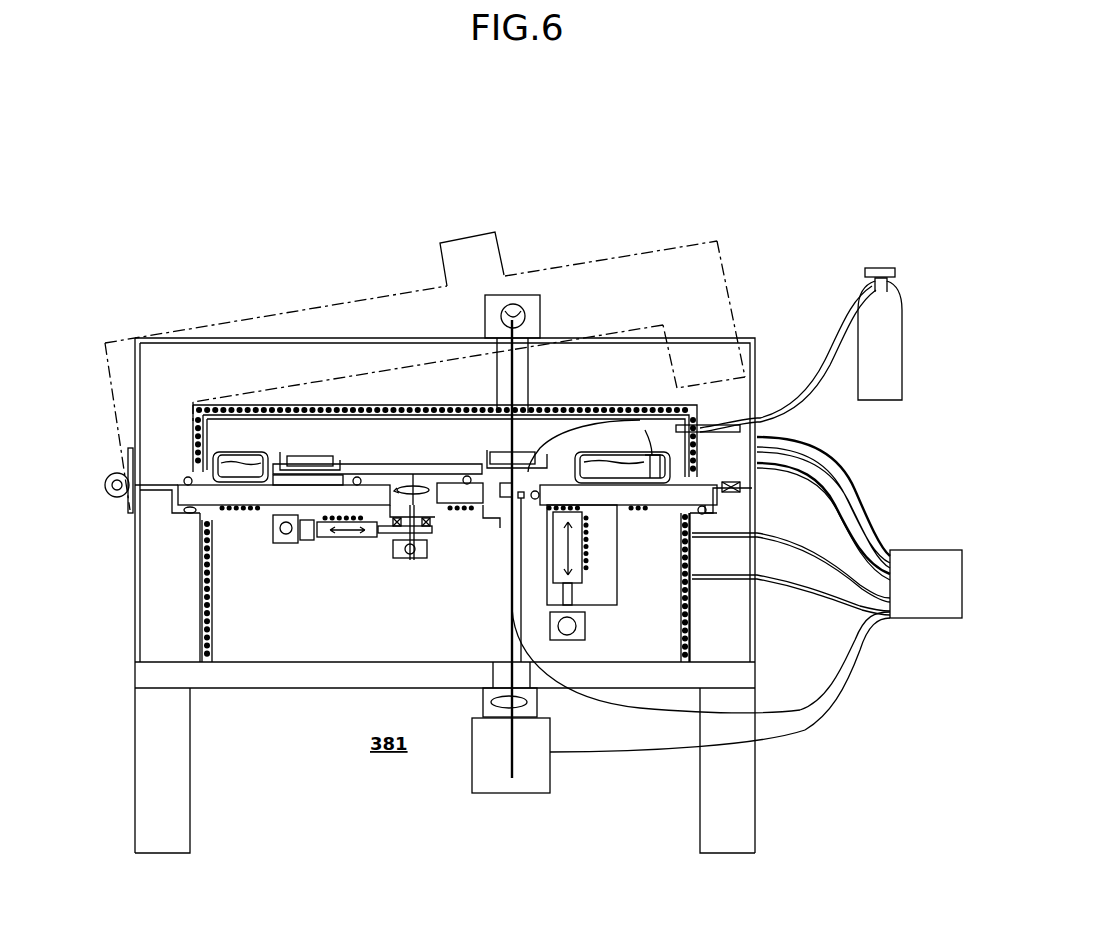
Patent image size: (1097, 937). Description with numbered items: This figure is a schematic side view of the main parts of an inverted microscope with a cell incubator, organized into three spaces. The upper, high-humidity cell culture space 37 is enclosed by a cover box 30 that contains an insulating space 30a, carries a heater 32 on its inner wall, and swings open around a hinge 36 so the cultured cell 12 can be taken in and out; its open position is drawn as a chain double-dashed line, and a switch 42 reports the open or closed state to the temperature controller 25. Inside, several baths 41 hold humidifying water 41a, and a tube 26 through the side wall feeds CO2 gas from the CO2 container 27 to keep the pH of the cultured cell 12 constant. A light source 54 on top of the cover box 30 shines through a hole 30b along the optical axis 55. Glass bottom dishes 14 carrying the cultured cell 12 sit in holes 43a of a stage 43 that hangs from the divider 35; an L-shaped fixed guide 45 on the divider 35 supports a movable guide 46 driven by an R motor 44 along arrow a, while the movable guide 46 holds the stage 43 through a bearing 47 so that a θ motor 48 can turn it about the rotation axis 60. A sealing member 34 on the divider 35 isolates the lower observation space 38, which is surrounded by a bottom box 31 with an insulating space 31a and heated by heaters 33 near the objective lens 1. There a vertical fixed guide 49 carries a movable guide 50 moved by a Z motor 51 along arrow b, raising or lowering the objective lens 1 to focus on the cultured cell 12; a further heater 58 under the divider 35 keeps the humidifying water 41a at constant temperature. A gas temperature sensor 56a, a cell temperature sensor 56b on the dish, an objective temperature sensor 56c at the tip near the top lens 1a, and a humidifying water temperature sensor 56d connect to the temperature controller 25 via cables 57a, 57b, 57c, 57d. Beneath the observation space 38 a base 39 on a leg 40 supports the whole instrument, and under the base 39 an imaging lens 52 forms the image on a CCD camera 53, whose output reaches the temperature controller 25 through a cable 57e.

The objective lens 1 is at (500, 515).
The top lens 1a is at (483, 514).
The cultured cell 12 is at (298, 456).
The glass bottom dish 14 is at (335, 455).
The temperature controller 25 is at (930, 622).
The tube 26 is at (827, 339).
The CO2 container 27 is at (903, 372).
The cover box 30 is at (207, 322).
The space 30a is at (147, 407).
The hole 30b is at (500, 371).
The bottom box 31 is at (135, 538).
The space 31a is at (138, 569).
The heater 32 is at (280, 406).
The heater 33 is at (213, 613).
The sealing member 34 is at (186, 477).
The divider 35 is at (178, 508).
The hinge 36 is at (106, 487).
The cell culture space 37 is at (358, 420).
The observation space 38 is at (208, 643).
The base 39 is at (233, 678).
The leg 40 is at (135, 757).
The bath 41 is at (264, 458).
The humidifying water 41a is at (228, 458).
The switch 42 is at (730, 494).
The stage 43 is at (431, 468).
The hole 43a is at (303, 476).
The R motor 44 is at (284, 545).
The fixed guide 45 is at (306, 545).
The movable guide 46 is at (338, 540).
The bearing 47 is at (395, 545).
The θ motor 48 is at (408, 560).
The fixed guide 49 is at (620, 570).
The movable guide 50 is at (552, 570).
The Z motor 51 is at (590, 628).
The imaging lens 52 is at (538, 707).
The CCD camera 53 is at (553, 782).
The light source 54 is at (540, 307).
The optical axis 55 is at (508, 641).
The gas temperature sensor 56a is at (640, 418).
The cell temperature sensor 56b is at (534, 448).
The objective temperature sensor 56c is at (516, 522).
The humidifying water temperature sensor 56d is at (592, 468).
The cable 57a is at (833, 448).
The cable 57b is at (835, 492).
The cable 57c is at (825, 652).
The cable 57d is at (830, 522).
The cable 57e is at (812, 712).
The heater 58 is at (228, 513).
The rotation axis 60 is at (401, 466).
The arrow a is at (355, 540).
The arrow b is at (586, 545).